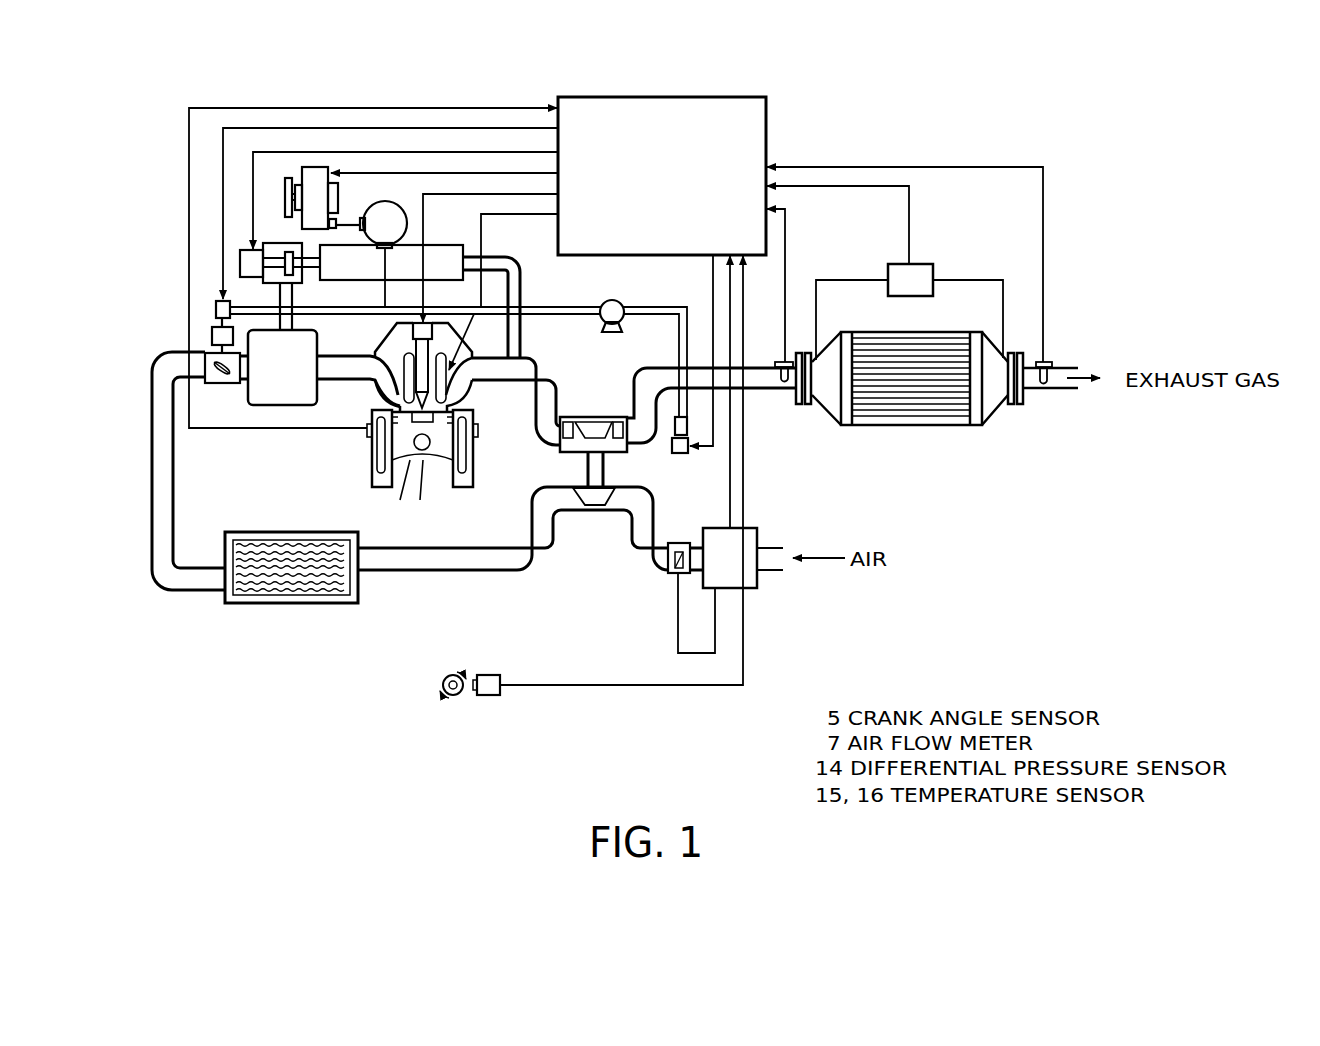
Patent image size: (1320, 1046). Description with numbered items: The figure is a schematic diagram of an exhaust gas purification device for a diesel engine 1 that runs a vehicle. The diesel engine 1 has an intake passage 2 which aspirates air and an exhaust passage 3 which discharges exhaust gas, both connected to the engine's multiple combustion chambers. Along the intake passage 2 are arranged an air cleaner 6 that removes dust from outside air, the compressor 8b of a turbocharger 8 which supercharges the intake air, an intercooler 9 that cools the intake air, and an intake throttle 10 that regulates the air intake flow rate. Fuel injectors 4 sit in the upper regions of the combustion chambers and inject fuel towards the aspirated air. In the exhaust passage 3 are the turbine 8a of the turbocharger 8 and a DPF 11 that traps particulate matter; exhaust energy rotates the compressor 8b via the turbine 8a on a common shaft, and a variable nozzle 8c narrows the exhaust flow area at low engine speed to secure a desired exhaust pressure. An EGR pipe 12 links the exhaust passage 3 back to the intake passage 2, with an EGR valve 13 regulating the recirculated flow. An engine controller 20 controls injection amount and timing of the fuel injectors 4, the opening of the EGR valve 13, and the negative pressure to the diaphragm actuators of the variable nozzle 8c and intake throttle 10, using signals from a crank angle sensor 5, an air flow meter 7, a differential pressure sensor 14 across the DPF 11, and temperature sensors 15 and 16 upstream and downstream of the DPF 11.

The diesel engine 1 is at (457, 492).
The intake passage 2 is at (346, 381).
The exhaust passage 3 is at (546, 356).
The fuel injector 4 is at (425, 317).
The crank angle sensor 5 is at (498, 676).
The air cleaner 6 is at (758, 587).
The air flow meter 7 is at (680, 542).
The turbocharger 8 is at (613, 401).
The turbine 8a is at (592, 417).
The compressor 8b is at (593, 507).
The variable nozzle 8c is at (628, 453).
The intercooler 9 is at (360, 586).
The intake throttle 10 is at (220, 384).
The DPF 11 is at (996, 410).
The EGR pipe 12 is at (498, 257).
The EGR valve 13 is at (248, 278).
The differential pressure sensor 14 is at (928, 263).
The temperature sensor 15 is at (781, 386).
The temperature sensor 16 is at (1048, 358).
The engine controller 20 is at (768, 119).